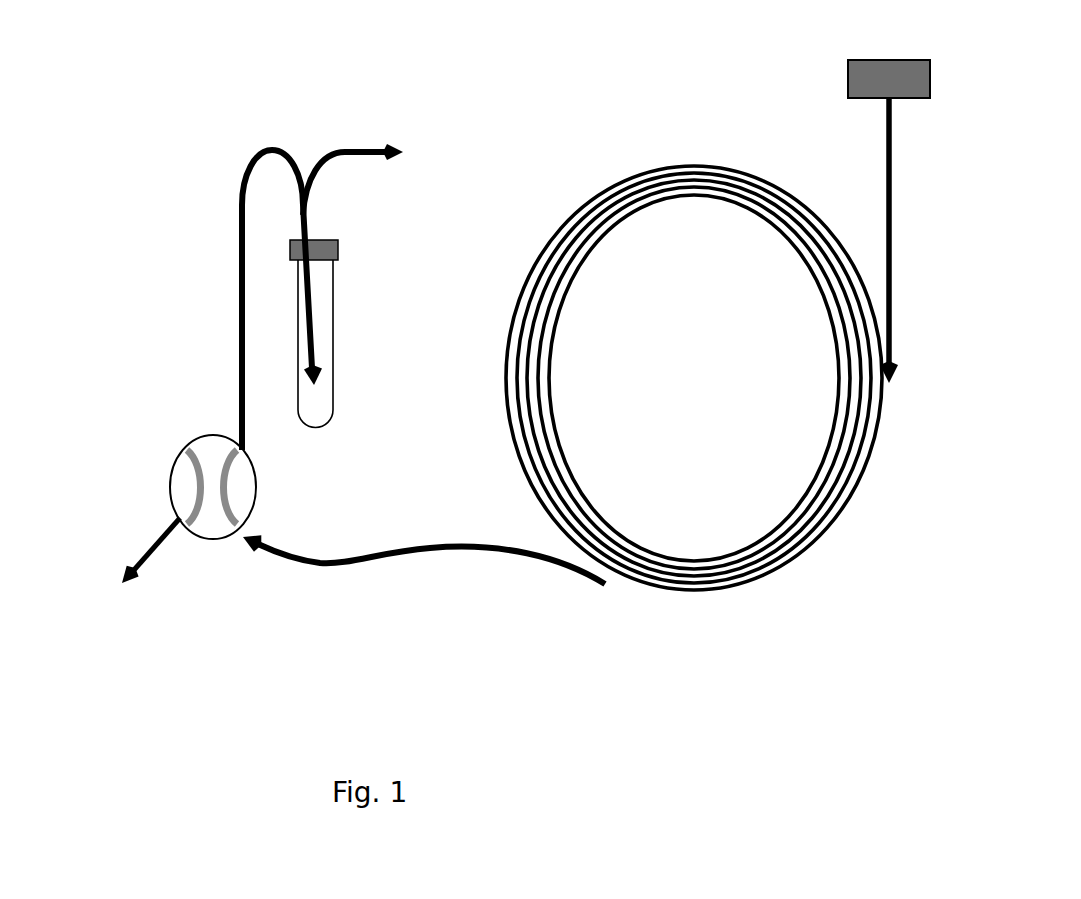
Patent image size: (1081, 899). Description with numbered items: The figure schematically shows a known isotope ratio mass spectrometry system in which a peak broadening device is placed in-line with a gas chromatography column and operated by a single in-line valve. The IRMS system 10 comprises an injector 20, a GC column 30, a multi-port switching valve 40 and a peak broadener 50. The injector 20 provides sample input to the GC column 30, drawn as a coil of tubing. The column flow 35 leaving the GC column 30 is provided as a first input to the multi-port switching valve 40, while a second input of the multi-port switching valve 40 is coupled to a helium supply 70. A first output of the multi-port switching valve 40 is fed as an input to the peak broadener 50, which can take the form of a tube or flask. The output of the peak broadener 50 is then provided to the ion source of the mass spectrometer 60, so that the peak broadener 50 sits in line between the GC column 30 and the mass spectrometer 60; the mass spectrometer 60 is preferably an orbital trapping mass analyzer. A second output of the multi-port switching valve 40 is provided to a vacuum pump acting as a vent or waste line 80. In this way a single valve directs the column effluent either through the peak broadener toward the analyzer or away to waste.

The IRMS system 10 is at (975, 200).
The injector 20 is at (889, 202).
The GC column 30 is at (765, 271).
The column flow 35 is at (424, 576).
The multi-port switching valve 40 is at (281, 483).
The peak broadener 50 is at (350, 362).
The mass spectrometer 60 is at (381, 177).
The helium supply 70 is at (171, 429).
The waste line 80 is at (133, 573).